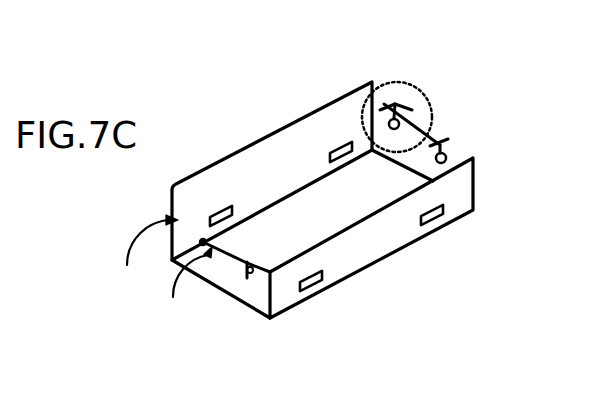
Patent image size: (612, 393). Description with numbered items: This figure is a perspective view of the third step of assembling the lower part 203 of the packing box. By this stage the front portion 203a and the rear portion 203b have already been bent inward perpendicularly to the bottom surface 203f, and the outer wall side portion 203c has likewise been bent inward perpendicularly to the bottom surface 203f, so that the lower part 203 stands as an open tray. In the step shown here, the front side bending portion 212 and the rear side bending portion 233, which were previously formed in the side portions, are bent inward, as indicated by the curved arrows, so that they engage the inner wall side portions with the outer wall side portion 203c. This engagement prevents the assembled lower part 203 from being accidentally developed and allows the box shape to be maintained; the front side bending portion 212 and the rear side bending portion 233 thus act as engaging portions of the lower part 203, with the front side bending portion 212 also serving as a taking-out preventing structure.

The lower part 203 is at (353, 79).
The front portion 203a is at (372, 257).
The rear portion 203b is at (265, 146).
The outer wall side portion 203c is at (438, 132).
The bottom surface 203f is at (302, 234).
The front side bending portion 212 is at (444, 160).
The rear side bending portion 233 is at (405, 113).